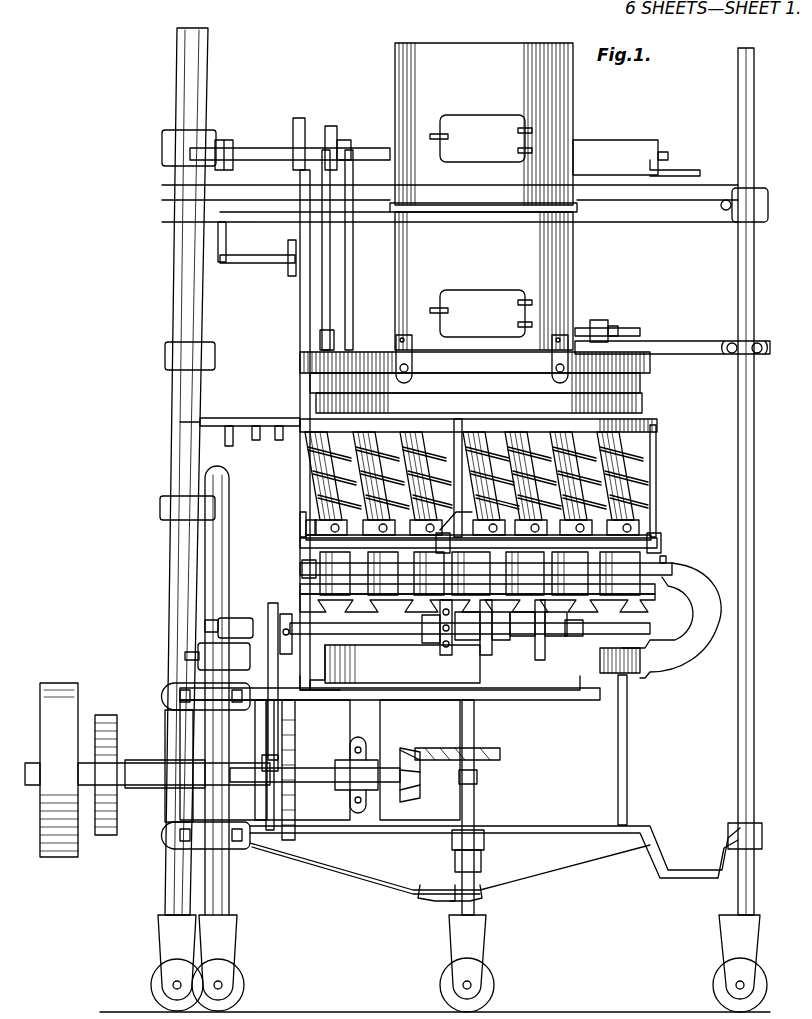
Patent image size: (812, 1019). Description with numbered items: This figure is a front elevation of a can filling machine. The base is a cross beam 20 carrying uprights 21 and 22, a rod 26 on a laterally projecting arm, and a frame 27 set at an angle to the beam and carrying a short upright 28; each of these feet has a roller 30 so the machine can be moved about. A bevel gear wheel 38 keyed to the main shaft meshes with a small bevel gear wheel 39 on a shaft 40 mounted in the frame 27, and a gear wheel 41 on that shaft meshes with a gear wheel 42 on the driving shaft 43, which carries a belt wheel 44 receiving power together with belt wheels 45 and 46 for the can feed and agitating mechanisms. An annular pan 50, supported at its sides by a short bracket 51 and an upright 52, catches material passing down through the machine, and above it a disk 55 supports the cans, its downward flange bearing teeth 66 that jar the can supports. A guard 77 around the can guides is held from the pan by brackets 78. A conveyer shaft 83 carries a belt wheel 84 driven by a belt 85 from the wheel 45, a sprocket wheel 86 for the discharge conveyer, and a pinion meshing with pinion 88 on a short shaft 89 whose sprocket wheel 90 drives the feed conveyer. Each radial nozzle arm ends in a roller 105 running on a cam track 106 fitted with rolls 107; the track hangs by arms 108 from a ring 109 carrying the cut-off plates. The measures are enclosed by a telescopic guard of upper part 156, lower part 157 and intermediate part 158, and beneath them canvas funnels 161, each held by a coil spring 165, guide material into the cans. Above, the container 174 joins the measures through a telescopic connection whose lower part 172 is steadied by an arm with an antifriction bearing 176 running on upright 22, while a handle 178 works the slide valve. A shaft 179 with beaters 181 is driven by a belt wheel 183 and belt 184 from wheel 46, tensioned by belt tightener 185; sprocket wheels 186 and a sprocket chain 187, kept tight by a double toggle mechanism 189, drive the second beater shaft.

The cross beam 20 is at (495, 863).
The upright 21 is at (170, 866).
The upright 22 is at (745, 892).
The rod 26 is at (460, 898).
The frame 27 is at (170, 735).
The short upright 28 is at (220, 876).
The roller 30 is at (152, 983).
The bevel gear wheel 38 is at (510, 752).
The small bevel gear wheel 39 is at (412, 770).
The shaft 40 is at (316, 770).
The gear wheel 41 is at (108, 716).
The gear wheel 42 is at (104, 776).
The driving shaft 43 is at (34, 782).
The belt wheel 44 is at (64, 690).
The belt wheel 45 is at (268, 760).
The belt wheel 46 is at (296, 742).
The annular pan 50 is at (408, 650).
The short bracket 51 is at (324, 660).
The upright 52 is at (628, 728).
The disk 55 is at (632, 600).
The teeth 66 is at (477, 608).
The guard 77 is at (300, 566).
The bracket 78 is at (708, 655).
The shaft 83 is at (402, 664).
The belt wheel 84 is at (270, 605).
The belt 85 is at (272, 712).
The sprocket wheel 86 is at (535, 640).
The pinion 88 is at (440, 640).
The short shaft 89 is at (390, 687).
The sprocket wheel 90 is at (486, 650).
The roller 105 is at (330, 524).
The cam track 106 is at (585, 525).
The roll 107 is at (448, 532).
The arm 108 is at (462, 450).
The ring 109 is at (652, 440).
The upper part of telescopic guard 156 is at (608, 360).
The lower part of telescopic guard 157 is at (650, 390).
The intermediate part of telescopic guard 158 is at (635, 400).
The funnel 161 is at (570, 478).
The coil spring 165 is at (320, 450).
The lower part of telescopic connection 172 is at (558, 290).
The container 174 is at (570, 130).
The antifriction bearing 176 is at (742, 342).
The handle 178 is at (680, 170).
The shaft 179 is at (252, 148).
The beaters or paddles 181 is at (578, 338).
The belt wheel 183 is at (299, 118).
The belt 184 is at (298, 340).
The belt tightener 185 is at (272, 262).
The sprocket wheel 186 is at (332, 126).
The sprocket chain 187 is at (330, 288).
The double toggle mechanism 189 is at (350, 230).